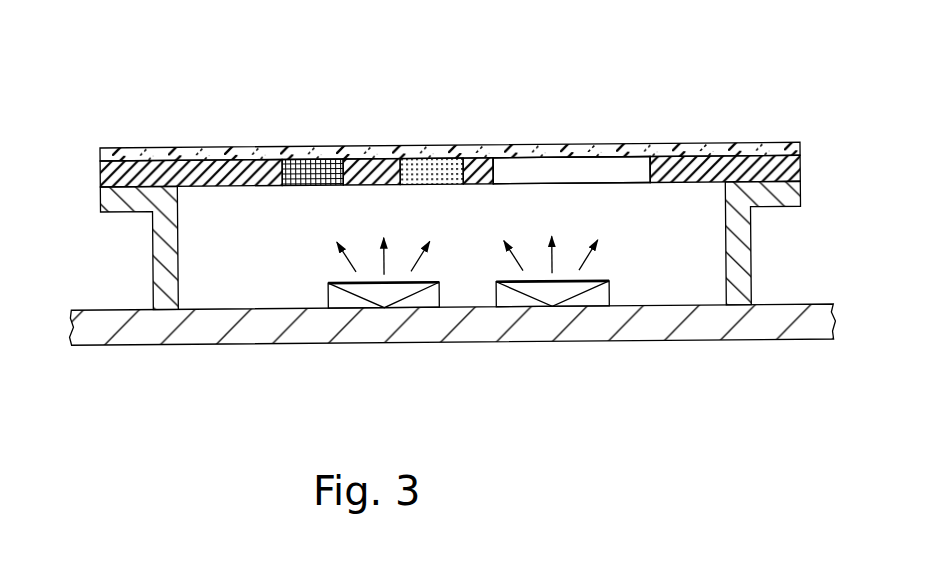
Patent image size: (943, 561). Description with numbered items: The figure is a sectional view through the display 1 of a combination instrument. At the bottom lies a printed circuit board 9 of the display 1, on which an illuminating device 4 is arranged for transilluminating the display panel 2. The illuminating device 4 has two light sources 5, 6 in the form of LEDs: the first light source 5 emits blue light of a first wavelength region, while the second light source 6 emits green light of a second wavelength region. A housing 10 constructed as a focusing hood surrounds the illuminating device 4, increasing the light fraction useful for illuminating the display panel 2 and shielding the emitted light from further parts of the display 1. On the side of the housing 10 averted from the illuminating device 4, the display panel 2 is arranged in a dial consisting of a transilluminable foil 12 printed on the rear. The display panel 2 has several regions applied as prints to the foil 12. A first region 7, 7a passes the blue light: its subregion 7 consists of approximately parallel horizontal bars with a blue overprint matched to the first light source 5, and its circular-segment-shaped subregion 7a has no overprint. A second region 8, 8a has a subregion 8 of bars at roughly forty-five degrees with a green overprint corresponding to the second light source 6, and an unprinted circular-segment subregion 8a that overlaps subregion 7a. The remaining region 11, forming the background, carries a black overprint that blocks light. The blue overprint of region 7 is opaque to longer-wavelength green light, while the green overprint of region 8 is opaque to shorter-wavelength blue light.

The display 1 is at (772, 103).
The display panel 2 is at (622, 132).
The illuminating device 4 is at (300, 293).
The first light source 5 is at (520, 302).
The second light source 6 is at (352, 302).
The subregion of first region 7 is at (307, 155).
The subregion of first region 7a is at (548, 157).
The subregion of second region 8 is at (420, 155).
The subregion of second region 8a is at (571, 169).
The printed circuit board 9 is at (133, 323).
The housing 10 is at (738, 252).
The remaining region 11 is at (222, 150).
The foil 12 is at (138, 152).